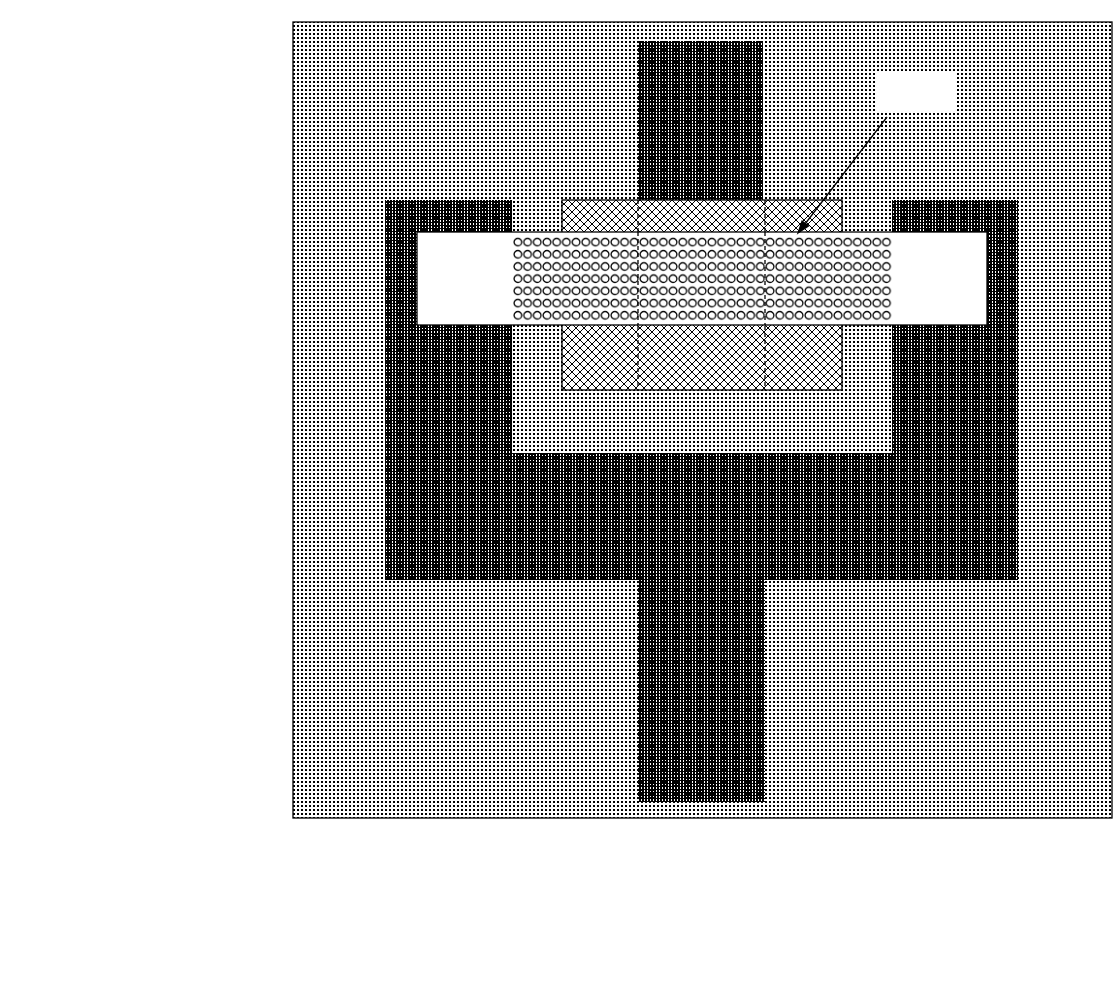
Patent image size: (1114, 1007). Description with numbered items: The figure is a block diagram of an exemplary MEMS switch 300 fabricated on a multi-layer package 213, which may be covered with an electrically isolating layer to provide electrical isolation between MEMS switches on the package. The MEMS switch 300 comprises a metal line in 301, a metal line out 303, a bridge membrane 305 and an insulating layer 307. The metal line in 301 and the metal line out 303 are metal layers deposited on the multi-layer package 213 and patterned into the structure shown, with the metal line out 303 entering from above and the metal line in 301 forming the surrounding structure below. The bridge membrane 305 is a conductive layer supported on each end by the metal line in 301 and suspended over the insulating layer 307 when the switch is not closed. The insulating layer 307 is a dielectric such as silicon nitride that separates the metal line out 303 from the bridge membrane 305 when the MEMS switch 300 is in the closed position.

The MEMS switch 300 is at (380, 118).
The multi-layer package 213 is at (522, 810).
The metal line in 301 is at (773, 526).
The metal line out 303 is at (737, 88).
The bridge membrane 305 is at (482, 310).
The insulating layer 307 is at (787, 382).